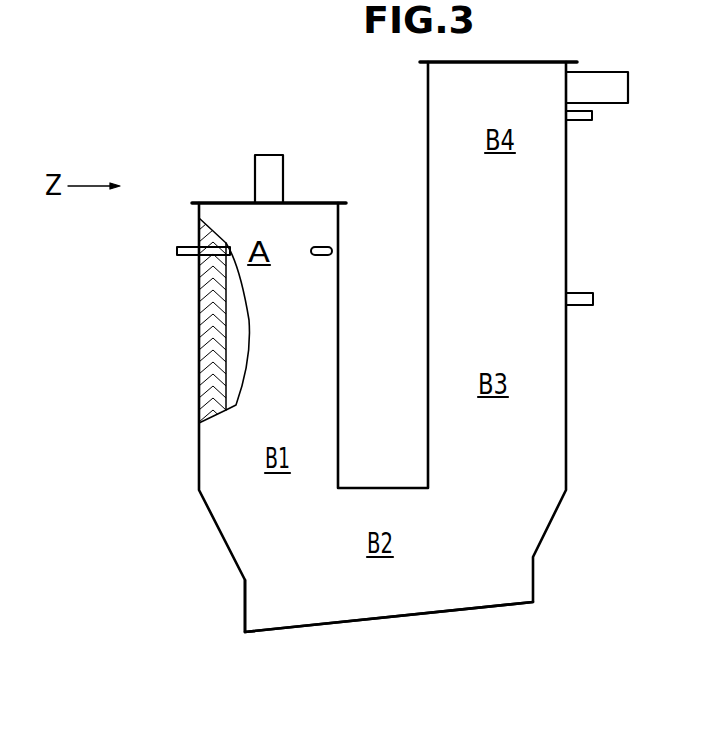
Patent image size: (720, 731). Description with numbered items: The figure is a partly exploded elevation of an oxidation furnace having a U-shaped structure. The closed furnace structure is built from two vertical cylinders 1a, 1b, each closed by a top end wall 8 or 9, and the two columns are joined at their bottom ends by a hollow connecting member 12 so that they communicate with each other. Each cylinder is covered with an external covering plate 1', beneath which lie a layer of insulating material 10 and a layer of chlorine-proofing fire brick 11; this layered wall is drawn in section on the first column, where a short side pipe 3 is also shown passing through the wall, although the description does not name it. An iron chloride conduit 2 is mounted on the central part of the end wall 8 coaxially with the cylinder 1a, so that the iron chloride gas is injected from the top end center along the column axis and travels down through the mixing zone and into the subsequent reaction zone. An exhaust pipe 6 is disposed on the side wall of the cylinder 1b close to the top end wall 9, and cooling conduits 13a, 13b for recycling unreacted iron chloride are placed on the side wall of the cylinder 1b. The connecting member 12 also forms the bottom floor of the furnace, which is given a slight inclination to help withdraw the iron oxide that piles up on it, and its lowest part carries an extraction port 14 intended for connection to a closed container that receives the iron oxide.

The vertical cylinder 1a is at (199, 452).
The vertical cylinder 1b is at (567, 355).
The external covering plate 1' is at (195, 320).
The iron chloride conduit 2 is at (255, 172).
The feed pipe 3 is at (185, 247).
The exhaust pipe 6 is at (628, 88).
The top end wall 8 is at (313, 203).
The top end wall 9 is at (552, 60).
The layer of insulating material 10 is at (210, 320).
The layer of chlorine-proofing fire brick 11 is at (222, 352).
The hollow connecting member 12 is at (415, 545).
The cooling conduit 13a is at (590, 117).
The cooling conduit 13b is at (585, 292).
The extraction port 14 is at (245, 612).